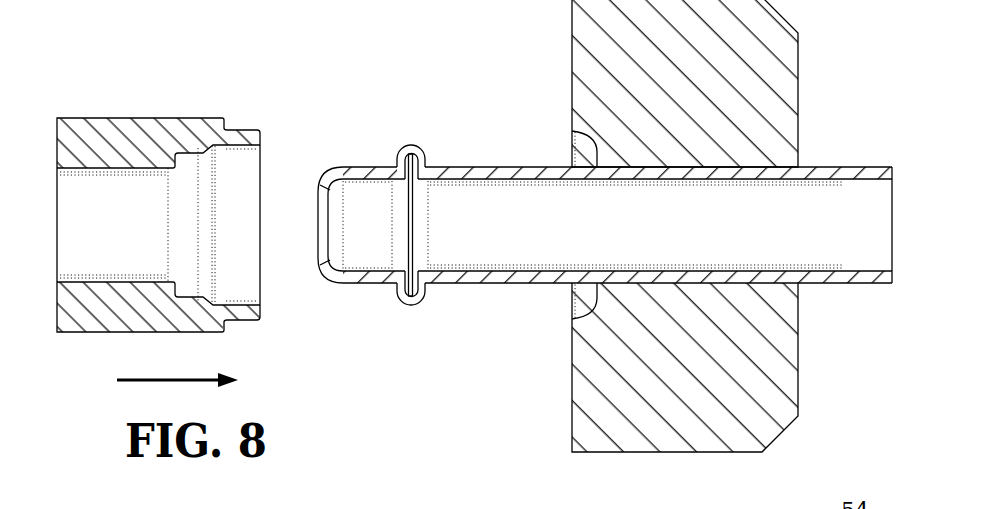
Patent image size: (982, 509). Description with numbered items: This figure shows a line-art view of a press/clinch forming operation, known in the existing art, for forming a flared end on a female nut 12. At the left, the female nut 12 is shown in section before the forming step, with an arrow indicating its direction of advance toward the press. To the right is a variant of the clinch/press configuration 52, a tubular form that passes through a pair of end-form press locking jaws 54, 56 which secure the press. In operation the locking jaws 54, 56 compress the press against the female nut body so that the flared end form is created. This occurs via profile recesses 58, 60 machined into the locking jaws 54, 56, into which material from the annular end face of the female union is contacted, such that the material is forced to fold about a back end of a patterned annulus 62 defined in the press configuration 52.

The female nut 12 is at (133, 118).
The clinch/press configuration 52 is at (465, 167).
The end-form press locking jaw 54 is at (604, 375).
The end-form press locking jaw 56 is at (632, 47).
The profile recess 58 is at (584, 302).
The profile recess 60 is at (578, 140).
The patterned annulus 62 is at (412, 146).